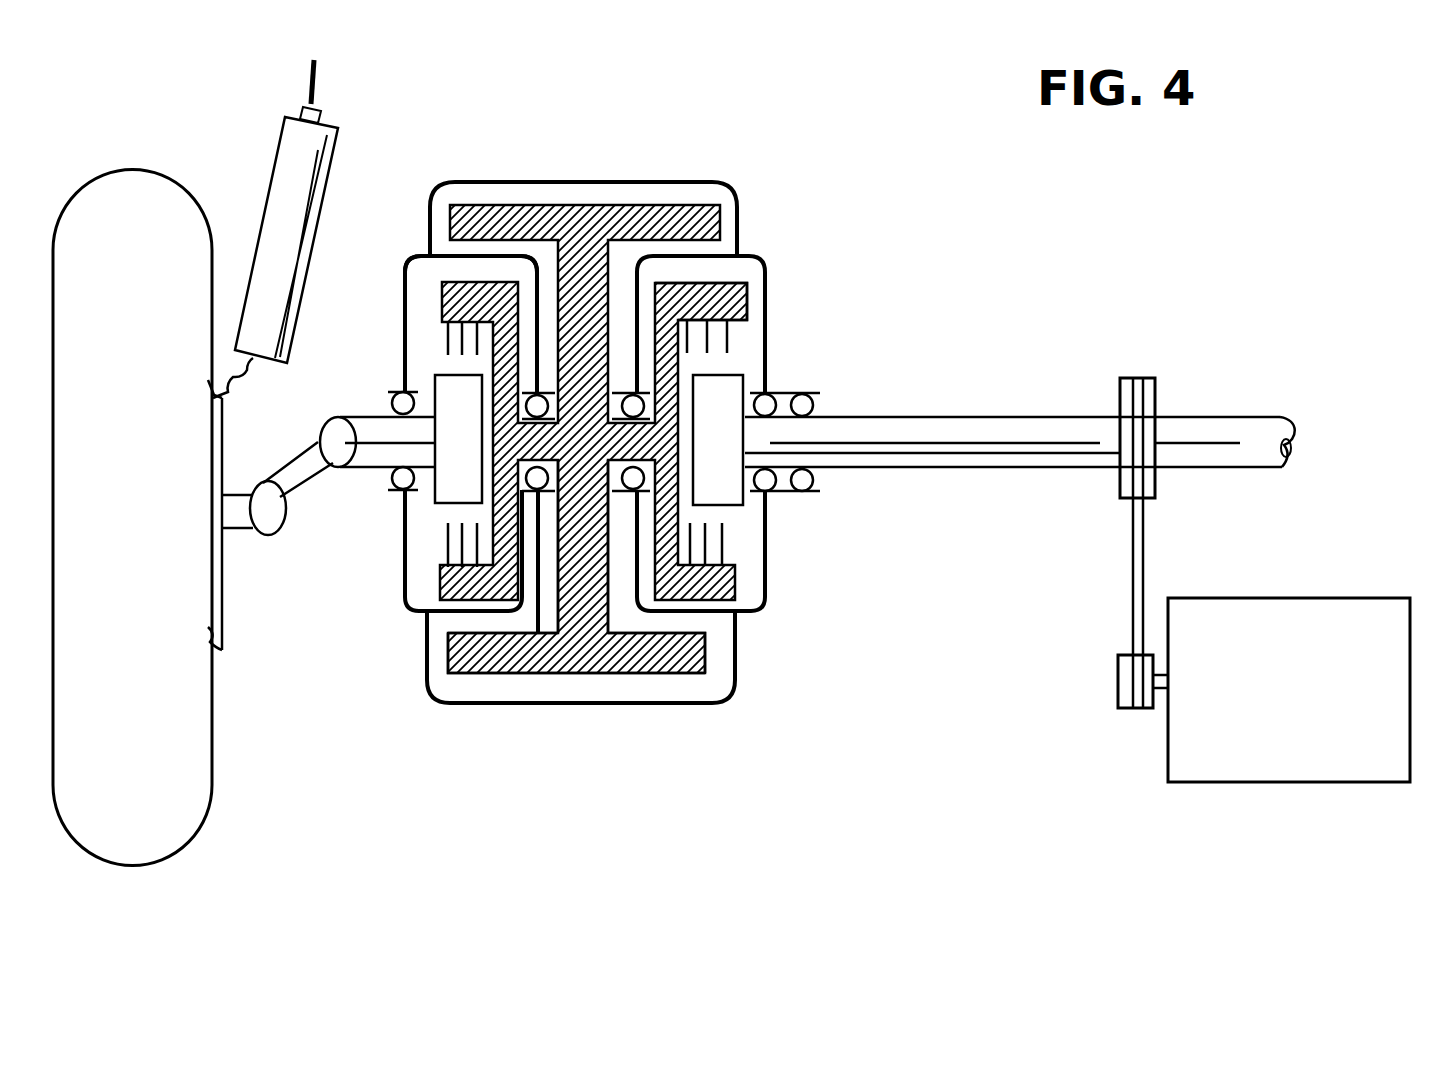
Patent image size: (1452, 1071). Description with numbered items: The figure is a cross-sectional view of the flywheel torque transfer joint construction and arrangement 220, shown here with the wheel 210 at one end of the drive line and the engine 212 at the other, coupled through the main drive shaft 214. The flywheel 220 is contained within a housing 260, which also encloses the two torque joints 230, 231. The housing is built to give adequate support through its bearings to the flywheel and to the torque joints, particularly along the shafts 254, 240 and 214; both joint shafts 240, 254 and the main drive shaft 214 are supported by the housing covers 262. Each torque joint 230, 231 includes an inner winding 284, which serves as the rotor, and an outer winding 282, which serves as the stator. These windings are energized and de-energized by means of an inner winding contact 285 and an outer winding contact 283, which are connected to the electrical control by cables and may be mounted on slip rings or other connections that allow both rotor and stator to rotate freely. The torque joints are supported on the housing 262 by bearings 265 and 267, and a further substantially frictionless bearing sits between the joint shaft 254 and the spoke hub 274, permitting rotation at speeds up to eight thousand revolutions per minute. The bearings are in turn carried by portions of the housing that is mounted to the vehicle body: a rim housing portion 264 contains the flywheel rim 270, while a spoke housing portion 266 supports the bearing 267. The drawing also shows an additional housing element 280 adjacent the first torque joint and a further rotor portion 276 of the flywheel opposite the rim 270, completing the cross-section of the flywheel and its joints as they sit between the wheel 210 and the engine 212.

The wheel 210 is at (148, 289).
The engine 212 is at (1343, 603).
The main drive shaft 214 is at (983, 415).
The flywheel torque transfer joint construction and arrangement 220 is at (620, 450).
The torque joint 230 is at (413, 592).
The torque joint 231 is at (742, 540).
The joint shaft 240 is at (370, 468).
The joint shaft 254 is at (605, 456).
The housing 260 is at (767, 320).
The housing cover 262 is at (400, 537).
The rim housing portion 264 is at (432, 688).
The bearing 265 is at (392, 405).
The spoke housing portion 266 is at (632, 395).
The bearing 267 is at (640, 480).
The flywheel rim 270 is at (513, 655).
The spoke hub 274 is at (597, 607).
The rotor plate 276 is at (656, 655).
The housing 280 is at (410, 263).
The outer winding 282 is at (737, 300).
The outer winding contact 283 is at (680, 355).
The inner winding 284 is at (725, 450).
The inner winding contact 285 is at (808, 395).